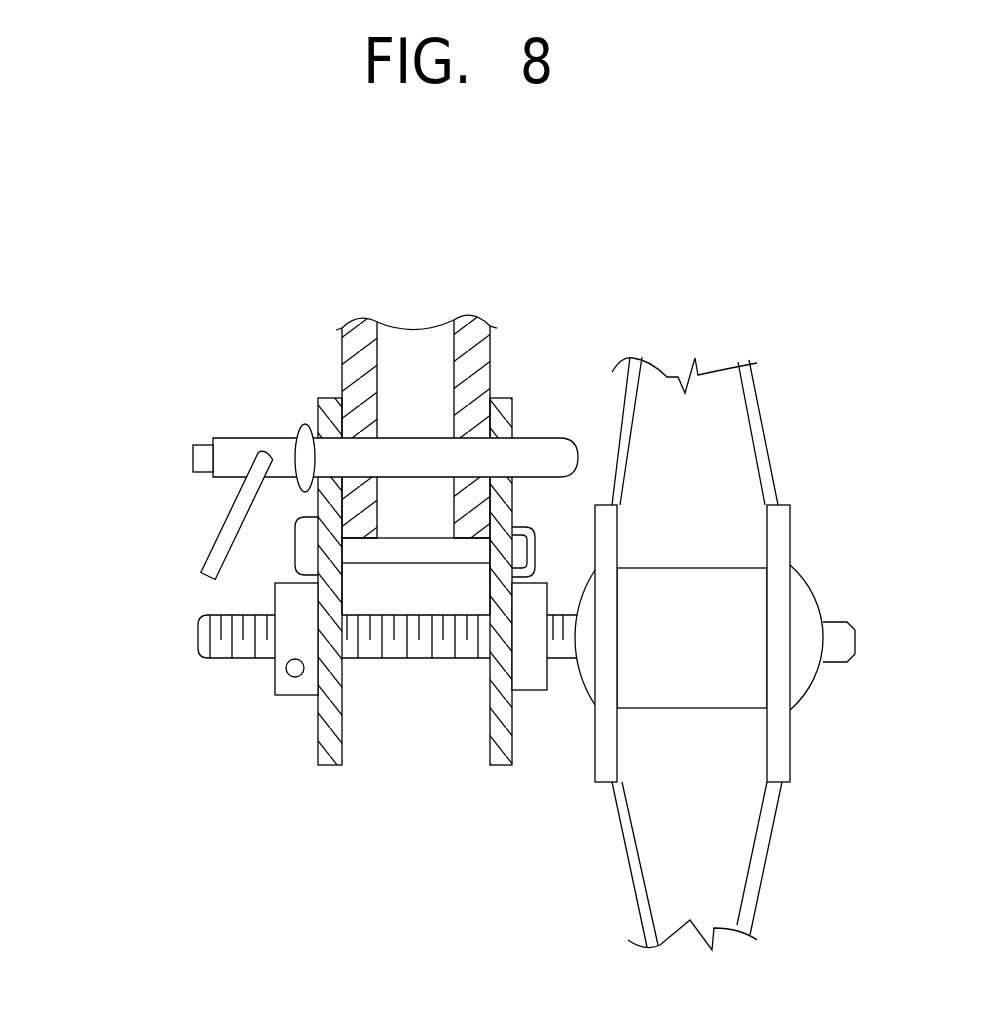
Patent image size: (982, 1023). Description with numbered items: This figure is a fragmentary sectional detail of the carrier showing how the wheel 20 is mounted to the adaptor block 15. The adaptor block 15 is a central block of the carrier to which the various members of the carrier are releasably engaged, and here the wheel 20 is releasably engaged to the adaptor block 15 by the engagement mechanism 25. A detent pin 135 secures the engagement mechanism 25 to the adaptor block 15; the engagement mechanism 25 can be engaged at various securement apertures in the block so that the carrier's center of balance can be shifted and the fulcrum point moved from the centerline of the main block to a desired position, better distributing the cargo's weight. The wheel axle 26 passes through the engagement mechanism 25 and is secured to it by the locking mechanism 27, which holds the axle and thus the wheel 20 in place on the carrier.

The adaptor block 15 is at (347, 342).
The detent pin 135 is at (223, 448).
The wheel 20 is at (733, 445).
The engagement mechanism 25 is at (312, 752).
The wheel axle 26 is at (203, 640).
The locking mechanism 27 is at (280, 675).